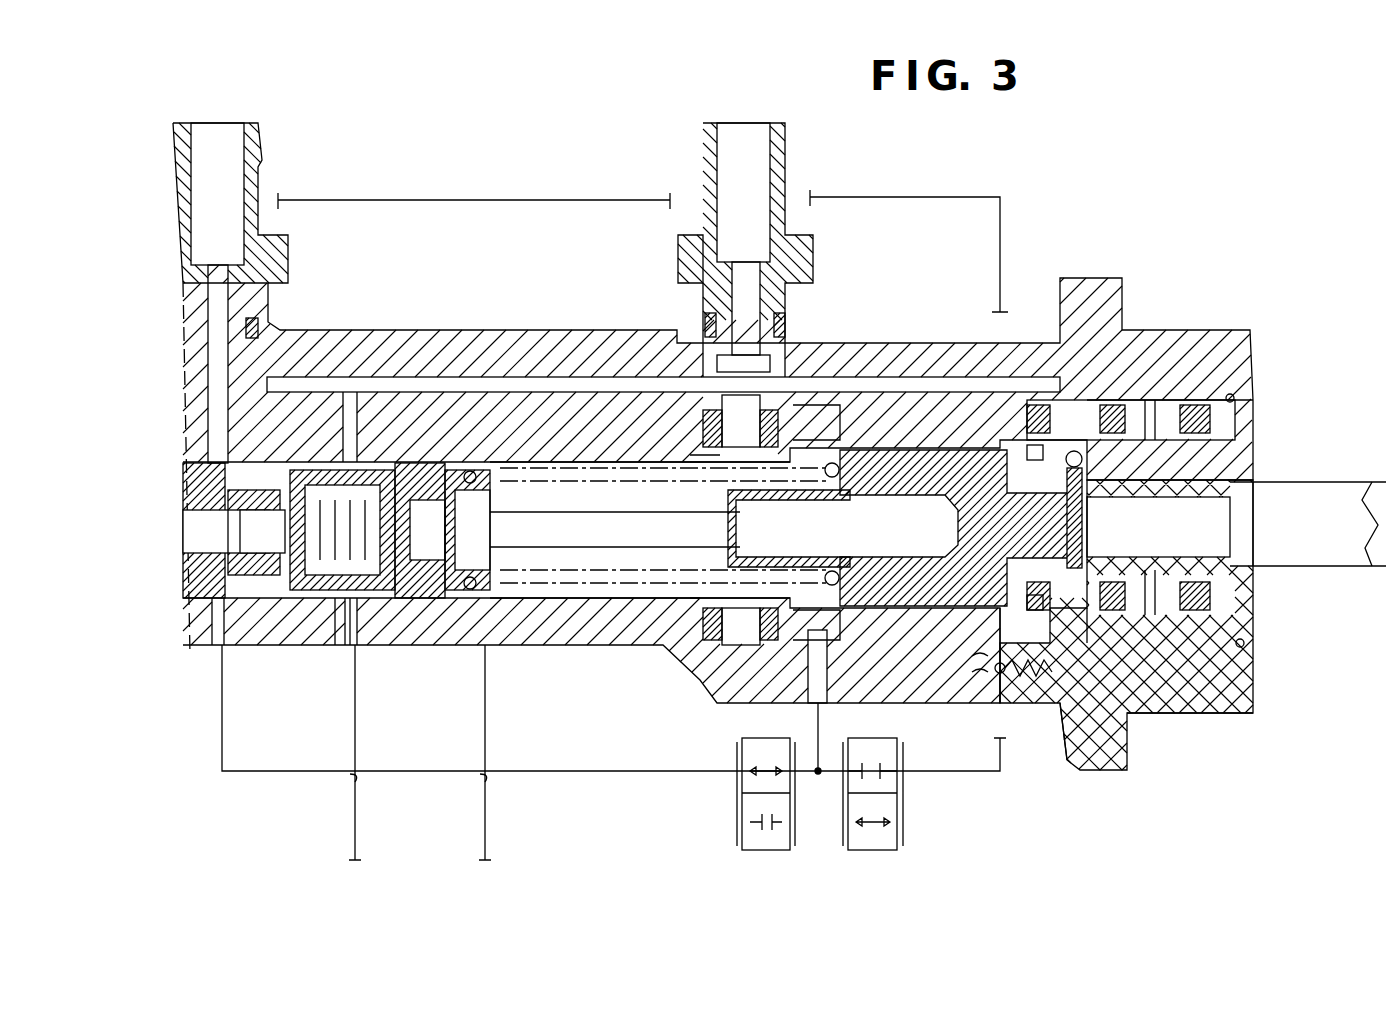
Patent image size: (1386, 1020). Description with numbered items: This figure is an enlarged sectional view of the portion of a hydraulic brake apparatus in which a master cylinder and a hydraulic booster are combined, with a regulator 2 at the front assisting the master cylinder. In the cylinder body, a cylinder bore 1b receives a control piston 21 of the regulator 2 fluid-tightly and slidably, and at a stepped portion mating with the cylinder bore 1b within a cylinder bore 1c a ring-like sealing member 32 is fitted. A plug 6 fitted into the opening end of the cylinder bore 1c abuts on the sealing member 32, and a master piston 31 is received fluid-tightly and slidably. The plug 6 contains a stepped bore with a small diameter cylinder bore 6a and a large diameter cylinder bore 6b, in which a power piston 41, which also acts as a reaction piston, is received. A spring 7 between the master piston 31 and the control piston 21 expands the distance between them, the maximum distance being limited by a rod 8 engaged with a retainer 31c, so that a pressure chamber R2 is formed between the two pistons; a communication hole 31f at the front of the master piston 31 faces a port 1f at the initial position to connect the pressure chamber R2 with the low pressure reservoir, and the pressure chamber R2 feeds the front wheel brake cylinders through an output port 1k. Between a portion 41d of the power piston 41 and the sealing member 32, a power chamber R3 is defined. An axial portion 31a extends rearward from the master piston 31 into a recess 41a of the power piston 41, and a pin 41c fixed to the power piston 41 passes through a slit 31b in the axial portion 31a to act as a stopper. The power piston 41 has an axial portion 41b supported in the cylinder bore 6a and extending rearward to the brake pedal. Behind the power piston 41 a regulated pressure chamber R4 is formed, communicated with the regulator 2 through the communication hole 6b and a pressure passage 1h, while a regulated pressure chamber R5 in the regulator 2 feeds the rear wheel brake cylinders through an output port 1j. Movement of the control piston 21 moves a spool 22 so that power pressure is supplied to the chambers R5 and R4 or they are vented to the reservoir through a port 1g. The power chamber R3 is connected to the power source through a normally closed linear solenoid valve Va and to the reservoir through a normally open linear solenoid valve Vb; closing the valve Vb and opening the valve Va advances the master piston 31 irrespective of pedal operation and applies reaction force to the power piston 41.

The cylinder bore 1b is at (535, 598).
The cylinder bore 1c is at (715, 690).
The port 1f is at (690, 330).
The port 1g is at (290, 330).
The pressure passage 1h is at (560, 392).
The output port 1j is at (348, 645).
The output port 1k is at (480, 605).
The regulator 2 is at (290, 620).
The control piston 21 is at (395, 598).
The spool 22 is at (298, 590).
The spring 7 is at (435, 600).
The rod 8 is at (610, 600).
The master piston 31 is at (1005, 450).
The axial portion 31a is at (1075, 450).
The slit 31b is at (1240, 608).
The retainer 31c is at (680, 598).
The communication hole 31f is at (690, 455).
The sealing member 32 is at (770, 400).
The plug 6 is at (1220, 432).
The small diameter cylinder bore 6a is at (1250, 485).
The large diameter cylinder bore 6b is at (925, 448).
The power piston 41 is at (1130, 742).
The recess 41a is at (1230, 570).
The axial portion 41b is at (1305, 566).
The pin 41c is at (1215, 704).
The portion 41d is at (1080, 610).
The pressure chamber R2 is at (620, 598).
The power chamber R3 is at (975, 640).
The regulated pressure chamber R4 is at (1160, 655).
The regulated pressure chamber R5 is at (352, 420).
The linear solenoid valve Va is at (903, 804).
The linear solenoid valve Vb is at (742, 812).